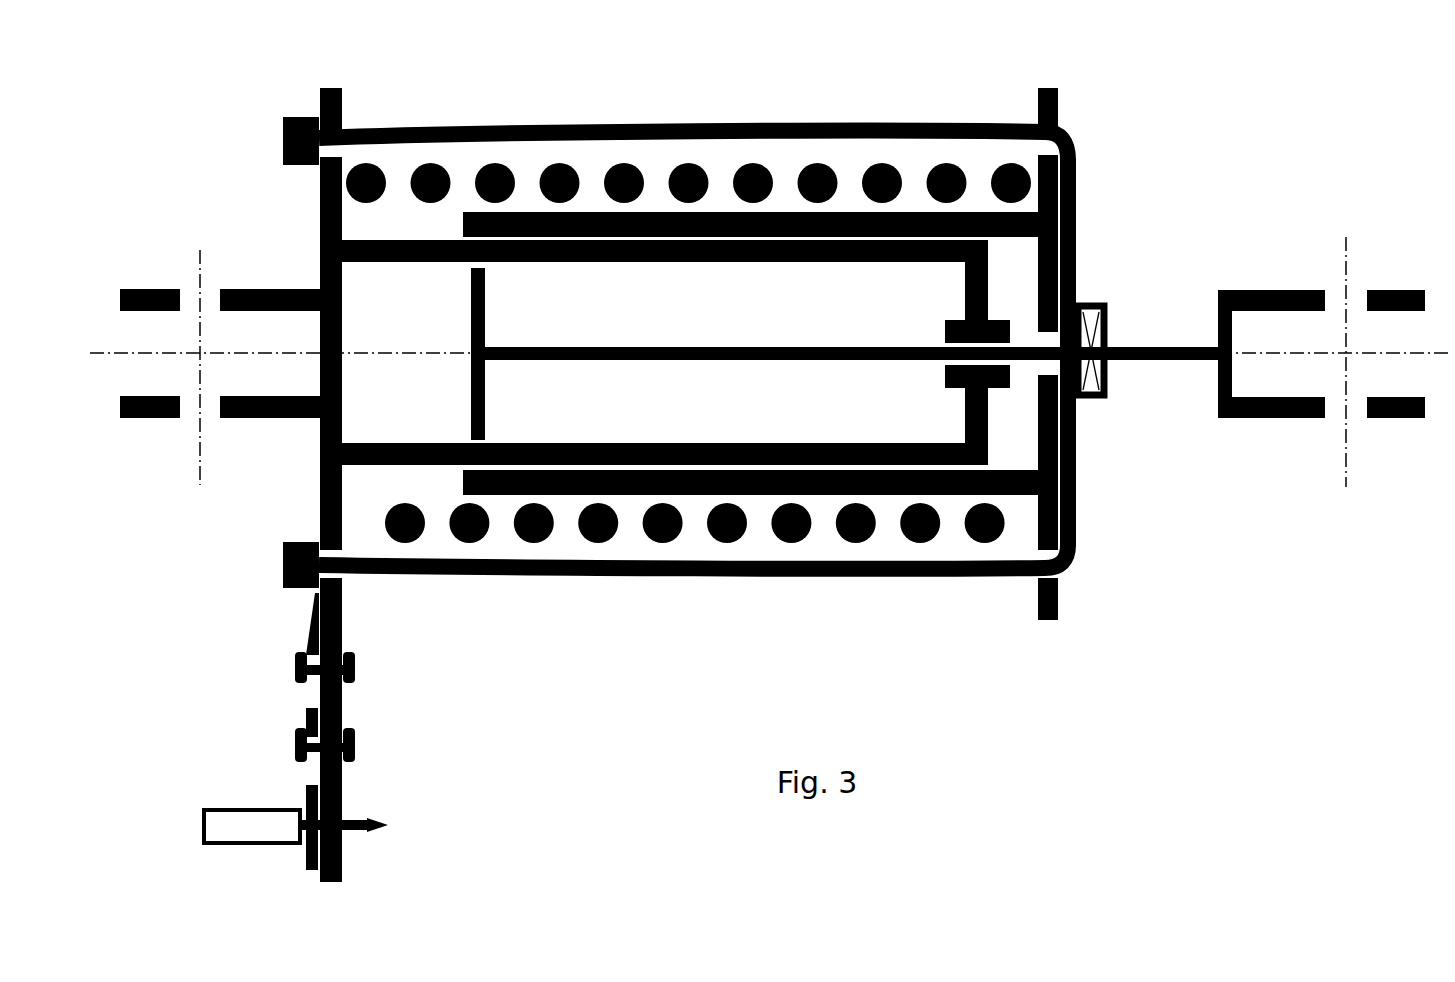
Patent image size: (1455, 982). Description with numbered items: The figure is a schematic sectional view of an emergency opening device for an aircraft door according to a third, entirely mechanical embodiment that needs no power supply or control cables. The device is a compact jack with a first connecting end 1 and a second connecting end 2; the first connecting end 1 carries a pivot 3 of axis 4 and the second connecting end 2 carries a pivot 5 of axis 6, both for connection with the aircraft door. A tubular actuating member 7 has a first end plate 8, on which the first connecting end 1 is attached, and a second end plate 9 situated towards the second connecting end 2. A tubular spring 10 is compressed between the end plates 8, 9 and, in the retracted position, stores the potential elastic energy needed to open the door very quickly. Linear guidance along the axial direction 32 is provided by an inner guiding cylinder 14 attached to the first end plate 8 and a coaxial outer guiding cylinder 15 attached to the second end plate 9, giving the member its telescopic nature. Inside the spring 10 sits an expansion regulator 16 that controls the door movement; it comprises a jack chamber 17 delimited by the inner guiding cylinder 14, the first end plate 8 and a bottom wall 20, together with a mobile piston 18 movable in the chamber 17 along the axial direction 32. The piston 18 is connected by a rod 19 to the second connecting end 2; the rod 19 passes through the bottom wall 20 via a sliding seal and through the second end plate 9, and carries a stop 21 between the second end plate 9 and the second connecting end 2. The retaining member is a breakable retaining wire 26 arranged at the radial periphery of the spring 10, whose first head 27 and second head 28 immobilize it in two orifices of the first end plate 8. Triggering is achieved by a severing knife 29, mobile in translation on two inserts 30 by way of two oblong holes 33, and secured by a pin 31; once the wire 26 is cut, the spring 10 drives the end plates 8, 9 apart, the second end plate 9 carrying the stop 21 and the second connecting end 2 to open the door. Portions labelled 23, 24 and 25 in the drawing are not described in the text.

The first connecting end 1 is at (146, 289).
The second connecting end 2 is at (1386, 290).
The pivot 3 is at (180, 300).
The axis 4 is at (200, 477).
The pivot 5 is at (1326, 300).
The axis 6 is at (1348, 272).
The tubular actuating member 7 is at (1063, 96).
The first end plate 8 is at (320, 272).
The second end plate 9 is at (1058, 600).
The tubular spring 10 is at (628, 163).
The inner guiding cylinder 14 is at (650, 262).
The outer guiding cylinder 15 is at (530, 212).
The expansion regulator 16 is at (990, 413).
The jack chamber 17 is at (844, 354).
The mobile piston 18 is at (485, 431).
The rod 19 is at (795, 347).
The bottom wall 20 is at (965, 410).
The stop 21 is at (1105, 378).
The input shaft 23 is at (258, 283).
The frame lower portion 24 is at (343, 577).
The frame side portion 25 is at (1078, 248).
The retaining wire 26 is at (770, 128).
The first head 27 is at (283, 137).
The second head 28 is at (283, 567).
The severing knife 29 is at (306, 717).
The inserts 30 is at (355, 670).
The pin 31 is at (245, 820).
The axial direction 32 is at (153, 355).
The oblong holes 33 is at (308, 691).